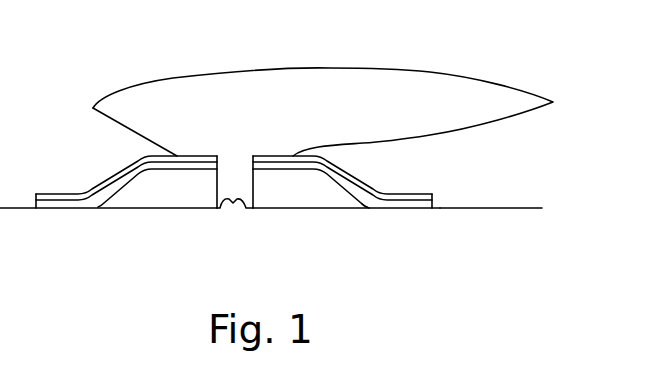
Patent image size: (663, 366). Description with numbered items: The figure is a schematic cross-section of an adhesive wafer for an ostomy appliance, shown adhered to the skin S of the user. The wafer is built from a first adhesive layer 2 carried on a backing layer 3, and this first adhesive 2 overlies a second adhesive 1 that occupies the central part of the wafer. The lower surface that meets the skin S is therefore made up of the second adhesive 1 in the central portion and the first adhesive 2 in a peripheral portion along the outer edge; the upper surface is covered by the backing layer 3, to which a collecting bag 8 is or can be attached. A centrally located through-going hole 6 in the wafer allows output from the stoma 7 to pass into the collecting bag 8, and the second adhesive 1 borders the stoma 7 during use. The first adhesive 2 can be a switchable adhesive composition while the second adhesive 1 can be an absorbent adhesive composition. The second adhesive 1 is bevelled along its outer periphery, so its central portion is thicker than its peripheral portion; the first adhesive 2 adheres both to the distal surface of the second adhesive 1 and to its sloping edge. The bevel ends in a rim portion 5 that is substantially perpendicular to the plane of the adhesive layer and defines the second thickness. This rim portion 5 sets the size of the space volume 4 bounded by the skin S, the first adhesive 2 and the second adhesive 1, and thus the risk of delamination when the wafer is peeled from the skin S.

The second adhesive 1 is at (285, 208).
The first adhesive layer 2 is at (407, 208).
The backing layer 3 is at (363, 181).
The space volume 4 is at (370, 208).
The rim portion 5 is at (95, 208).
The through-going hole 6 is at (235, 182).
The stoma 7 is at (236, 220).
The collecting bag 8 is at (174, 78).
The skin S is at (491, 222).